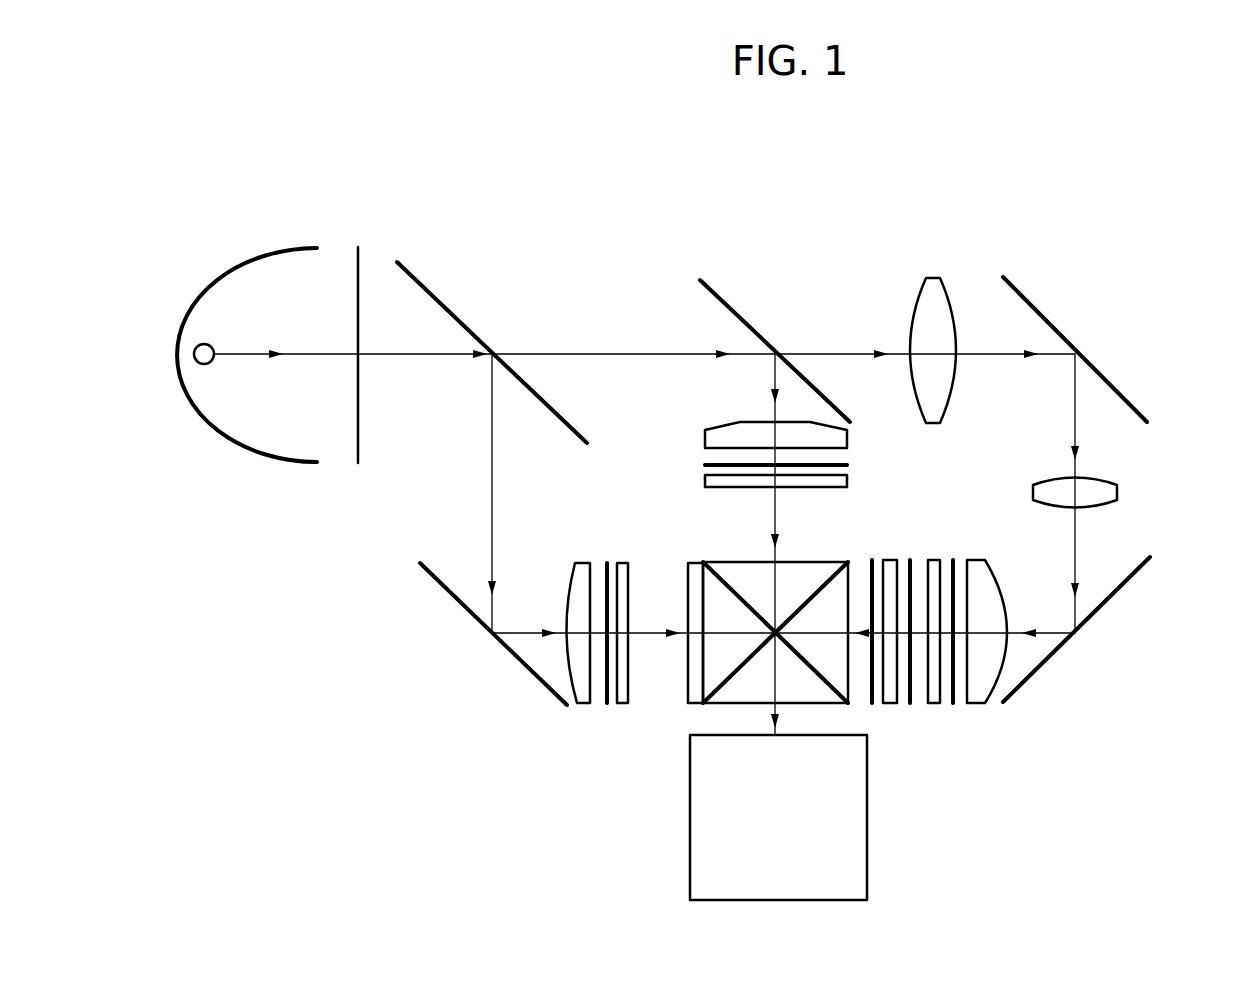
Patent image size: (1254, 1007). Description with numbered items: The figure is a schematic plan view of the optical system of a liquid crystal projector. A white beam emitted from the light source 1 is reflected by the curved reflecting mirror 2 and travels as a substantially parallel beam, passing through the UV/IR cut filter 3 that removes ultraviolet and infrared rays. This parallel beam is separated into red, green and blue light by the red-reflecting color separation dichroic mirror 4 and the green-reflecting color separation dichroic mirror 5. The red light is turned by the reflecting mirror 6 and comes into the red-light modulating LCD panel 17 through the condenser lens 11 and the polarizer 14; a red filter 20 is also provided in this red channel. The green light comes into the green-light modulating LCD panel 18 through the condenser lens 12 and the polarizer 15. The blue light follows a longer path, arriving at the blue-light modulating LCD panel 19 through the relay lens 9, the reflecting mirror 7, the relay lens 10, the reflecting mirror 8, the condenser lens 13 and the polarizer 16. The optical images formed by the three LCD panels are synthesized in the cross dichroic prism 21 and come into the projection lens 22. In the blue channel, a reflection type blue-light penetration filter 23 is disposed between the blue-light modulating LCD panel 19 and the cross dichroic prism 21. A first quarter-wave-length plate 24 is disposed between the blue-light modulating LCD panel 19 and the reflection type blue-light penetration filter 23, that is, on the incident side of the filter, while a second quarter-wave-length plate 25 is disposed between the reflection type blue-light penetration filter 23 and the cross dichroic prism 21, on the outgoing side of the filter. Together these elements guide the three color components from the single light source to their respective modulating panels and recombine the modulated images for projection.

The light source 1 is at (209, 364).
The curved reflecting mirror 2 is at (262, 458).
The UV/IR cut filter 3 is at (356, 456).
The red-reflecting color separation dichroic mirror 4 is at (412, 275).
The green-reflecting color separation dichroic mirror 5 is at (723, 297).
The reflecting mirror 6 is at (460, 605).
The reflecting mirror 7 is at (1017, 288).
The reflecting mirror 8 is at (1123, 588).
The relay lens 9 is at (935, 276).
The relay lens 10 is at (1120, 493).
The condenser lens 11 is at (576, 705).
The condenser lens 12 is at (705, 436).
The condenser lens 13 is at (983, 704).
The polarizer 14 is at (607, 705).
The polarizer 15 is at (705, 463).
The polarizer 16 is at (955, 704).
The red-light modulating LCD panel 17 is at (628, 705).
The green-light modulating LCD panel 18 is at (705, 481).
The blue-light modulating LCD panel 19 is at (935, 704).
The red filter 20 is at (684, 692).
The cross dichroic prism 21 is at (740, 560).
The projection lens 22 is at (690, 845).
The reflection type blue-light penetration filter 23 is at (895, 558).
The first quarter-wave-length plate 24 is at (913, 558).
The second quarter-wave-length plate 25 is at (870, 558).